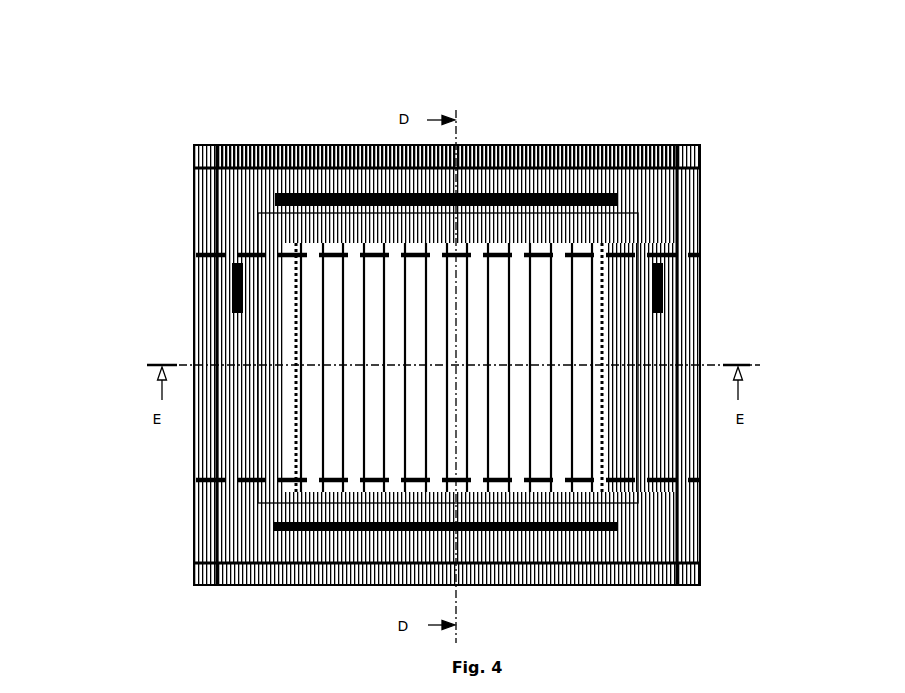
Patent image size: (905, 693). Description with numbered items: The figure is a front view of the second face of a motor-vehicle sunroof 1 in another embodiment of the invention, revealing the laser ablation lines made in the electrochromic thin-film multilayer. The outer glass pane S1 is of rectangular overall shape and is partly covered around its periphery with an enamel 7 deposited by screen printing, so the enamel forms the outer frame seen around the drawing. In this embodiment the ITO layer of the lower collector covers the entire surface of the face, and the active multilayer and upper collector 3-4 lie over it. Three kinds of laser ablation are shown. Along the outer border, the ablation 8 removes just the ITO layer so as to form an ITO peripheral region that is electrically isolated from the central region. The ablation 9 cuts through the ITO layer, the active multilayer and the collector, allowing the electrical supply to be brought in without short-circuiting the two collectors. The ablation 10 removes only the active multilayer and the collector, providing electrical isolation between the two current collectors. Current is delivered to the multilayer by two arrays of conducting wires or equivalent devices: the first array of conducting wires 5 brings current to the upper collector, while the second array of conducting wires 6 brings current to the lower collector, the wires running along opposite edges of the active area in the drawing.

The motor-vehicle sunroof 1 is at (183, 126).
The enamel 7 is at (256, 138).
The laser ablation of the active multilayer and the collector 10 is at (597, 198).
The glass pane S1 is at (708, 168).
The active multilayer and current collector 3-4 is at (653, 219).
The second array of conducting wires 6 is at (681, 330).
The laser ablation of the ITO layer, active multilayer and collector 9 is at (712, 267).
The laser ablation of the ITO layer 8 is at (181, 184).
The first array of conducting wires 5 is at (310, 544).